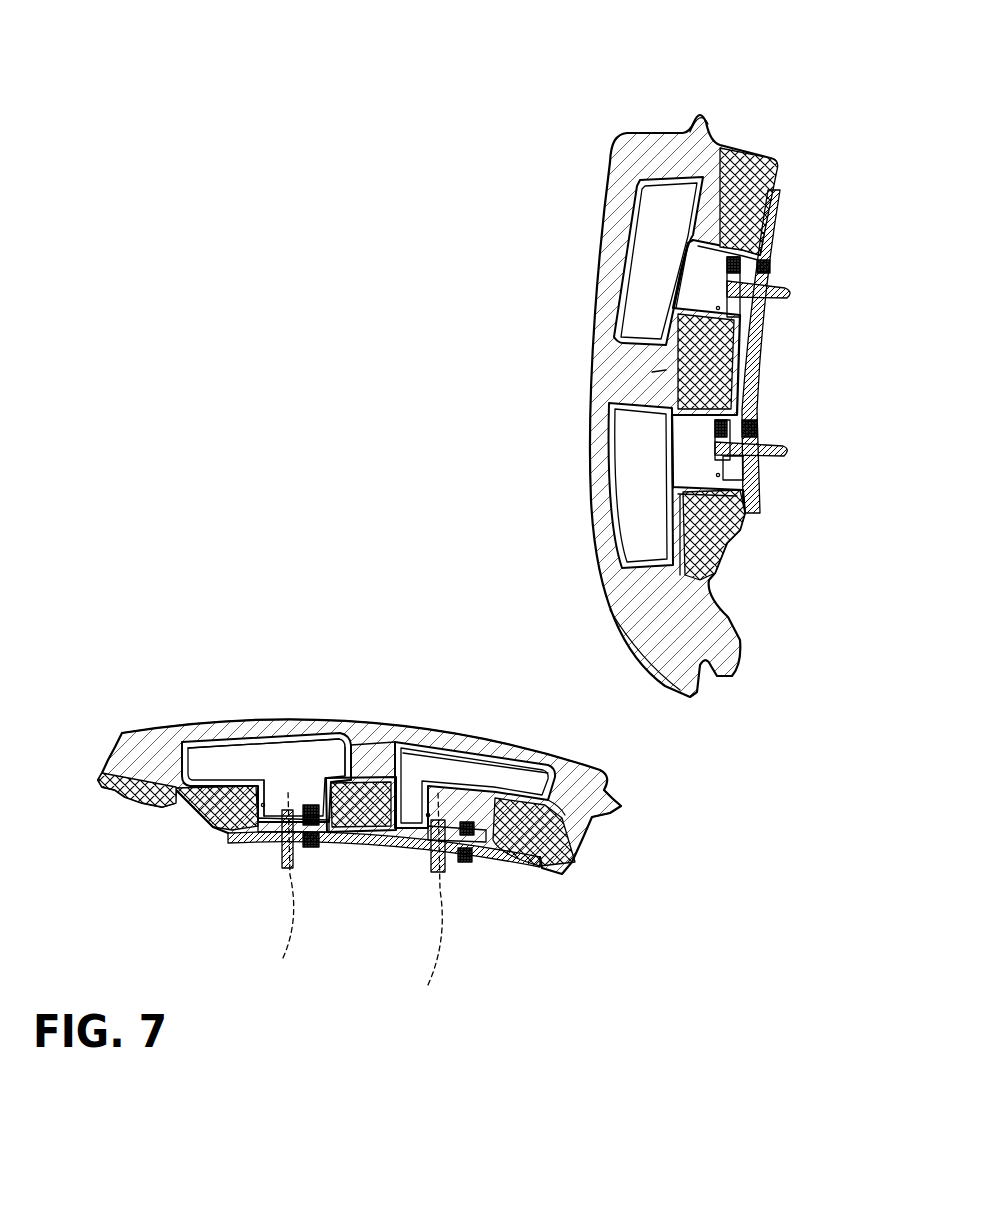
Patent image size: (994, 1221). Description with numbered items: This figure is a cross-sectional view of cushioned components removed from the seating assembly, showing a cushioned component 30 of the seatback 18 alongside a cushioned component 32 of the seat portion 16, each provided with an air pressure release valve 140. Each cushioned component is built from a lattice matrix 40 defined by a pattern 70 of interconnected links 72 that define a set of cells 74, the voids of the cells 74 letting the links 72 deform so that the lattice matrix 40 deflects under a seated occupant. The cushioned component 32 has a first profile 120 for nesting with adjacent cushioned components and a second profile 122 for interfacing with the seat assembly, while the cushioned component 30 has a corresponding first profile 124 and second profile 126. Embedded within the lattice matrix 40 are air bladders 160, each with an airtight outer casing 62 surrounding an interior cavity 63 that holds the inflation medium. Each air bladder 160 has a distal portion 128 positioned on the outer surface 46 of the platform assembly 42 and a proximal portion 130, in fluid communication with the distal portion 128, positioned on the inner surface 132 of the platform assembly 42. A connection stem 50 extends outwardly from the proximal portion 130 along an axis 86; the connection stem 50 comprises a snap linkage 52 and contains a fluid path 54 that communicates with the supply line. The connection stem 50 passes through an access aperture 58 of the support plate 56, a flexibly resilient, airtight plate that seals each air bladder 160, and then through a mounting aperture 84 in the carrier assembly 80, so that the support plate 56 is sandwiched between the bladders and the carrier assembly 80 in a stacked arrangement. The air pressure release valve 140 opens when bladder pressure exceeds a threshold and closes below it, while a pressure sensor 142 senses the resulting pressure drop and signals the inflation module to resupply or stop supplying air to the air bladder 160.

The seat portion 16 is at (360, 922).
The seatback 18 is at (646, 112).
The cushioned component 30 is at (758, 628).
The cushioned component 32 is at (595, 847).
The lattice matrix 40 is at (623, 152).
The platform assembly 42 is at (376, 757).
The outer surface 46 is at (652, 372).
The connection stem 50 is at (717, 457).
The snap linkage 52 is at (432, 848).
The fluid path 54 is at (430, 862).
The support plate 56 is at (758, 488).
The access aperture 58 is at (758, 313).
The outer casing 62 is at (205, 745).
The interior cavity 63 is at (317, 755).
The pattern 70 is at (597, 542).
The interconnected links 72 is at (630, 598).
The cells 74 is at (637, 643).
The carrier assembly 80 is at (758, 513).
The mounting aperture 84 is at (738, 467).
The axis 86 is at (353, 901).
The first profile 120 is at (118, 806).
The second profile 122 is at (622, 807).
The first profile 124 is at (705, 110).
The second profile 126 is at (713, 685).
The distal portion 128 is at (656, 222).
The proximal portion 130 is at (786, 213).
The inner surface 132 is at (760, 360).
The air pressure release valve 140 is at (777, 271).
The pressure sensor 142 is at (717, 308).
The air bladder 160 is at (624, 190).